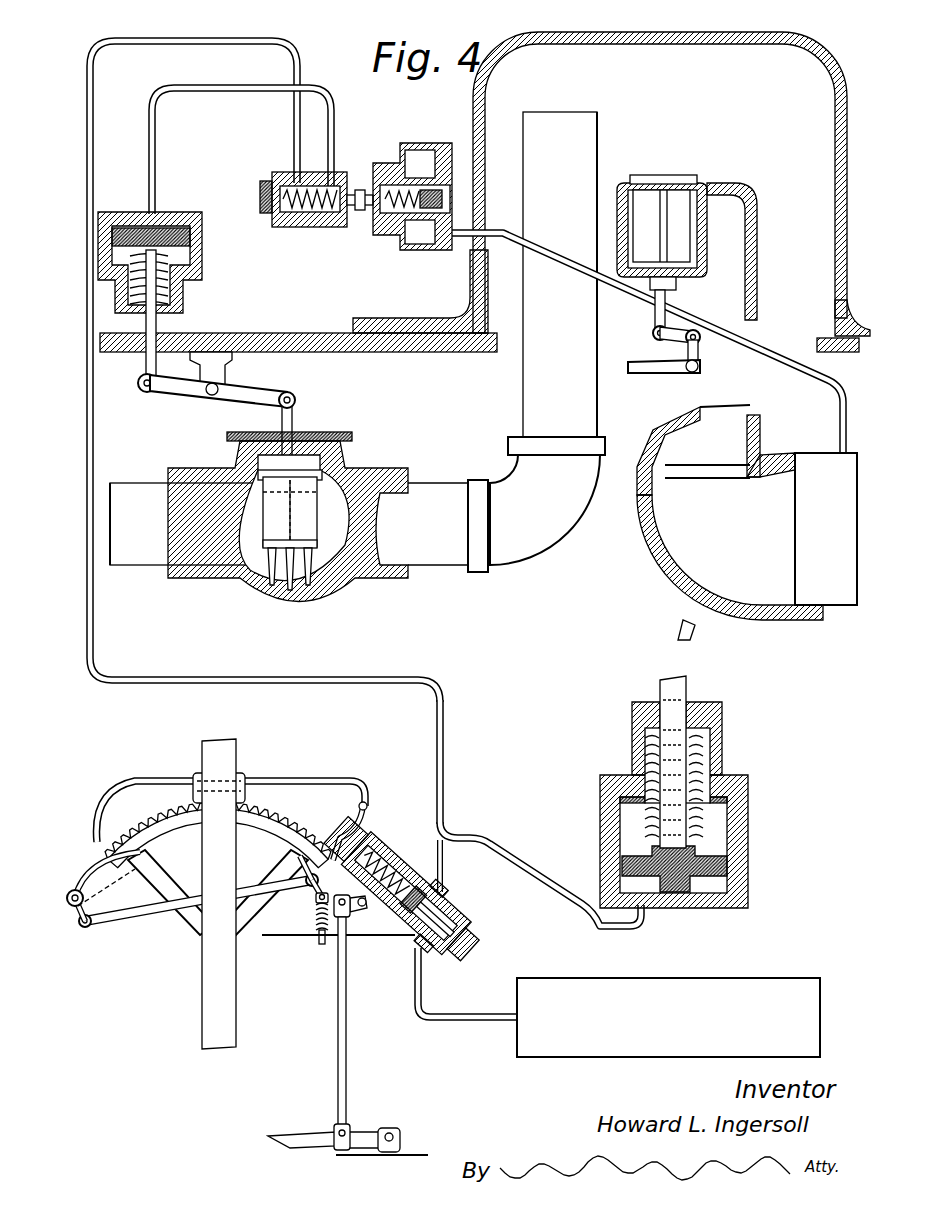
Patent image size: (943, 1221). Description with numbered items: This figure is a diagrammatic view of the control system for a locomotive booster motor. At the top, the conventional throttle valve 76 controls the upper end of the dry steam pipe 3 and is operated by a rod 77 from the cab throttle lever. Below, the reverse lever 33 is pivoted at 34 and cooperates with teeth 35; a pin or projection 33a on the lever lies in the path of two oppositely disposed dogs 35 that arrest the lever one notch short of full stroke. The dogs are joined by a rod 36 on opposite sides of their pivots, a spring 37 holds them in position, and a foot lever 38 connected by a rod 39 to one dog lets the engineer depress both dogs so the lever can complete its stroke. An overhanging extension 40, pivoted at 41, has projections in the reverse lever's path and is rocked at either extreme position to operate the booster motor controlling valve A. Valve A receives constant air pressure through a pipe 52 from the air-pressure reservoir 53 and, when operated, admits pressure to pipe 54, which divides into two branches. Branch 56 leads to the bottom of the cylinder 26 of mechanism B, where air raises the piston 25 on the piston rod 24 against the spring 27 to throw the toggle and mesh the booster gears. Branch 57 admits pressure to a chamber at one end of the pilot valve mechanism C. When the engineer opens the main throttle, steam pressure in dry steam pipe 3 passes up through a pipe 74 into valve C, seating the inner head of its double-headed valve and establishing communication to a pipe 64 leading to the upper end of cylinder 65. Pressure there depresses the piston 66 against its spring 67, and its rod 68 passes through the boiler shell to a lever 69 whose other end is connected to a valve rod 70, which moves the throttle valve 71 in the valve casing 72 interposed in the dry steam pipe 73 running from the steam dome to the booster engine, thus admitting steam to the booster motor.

The dry steam pipe 3 is at (747, 522).
The piston rod 24 is at (668, 690).
The piston 25 is at (702, 878).
The cylinder 26 is at (750, 832).
The spring 27 is at (648, 750).
The reverse lever 33 is at (236, 752).
The pin or projection 33a is at (215, 818).
The pivot 34 is at (228, 963).
The dogs 35 is at (125, 868).
The rod 36 is at (165, 918).
The spring 37 is at (318, 935).
The foot lever 38 is at (282, 1134).
The rod 39 is at (347, 1055).
The overhanging extension 40 is at (302, 781).
The pivot 41 is at (368, 808).
The pipe 52 is at (422, 980).
The air-pressure reservoir 53 is at (668, 1017).
The pipe 54 is at (445, 860).
The branch pipe 56 is at (508, 858).
The branch pipe 57 is at (446, 727).
The pipe 64 is at (230, 90).
The cylinder 65 is at (204, 247).
The piston 66 is at (170, 233).
The spring 67 is at (186, 296).
The rod 68 is at (138, 373).
The lever 69 is at (192, 404).
The valve rod 70 is at (294, 424).
The throttle valve 71 is at (275, 524).
The valve casing 72 is at (360, 468).
The dry steam pipe 73 is at (522, 388).
The pipe 74 is at (540, 250).
The throttle valve 76 is at (690, 220).
The rod 77 is at (635, 376).
The booster motor controlling valve A is at (392, 866).
The fluid operated piston mechanism B is at (722, 748).
The pilot valve mechanism C is at (388, 168).